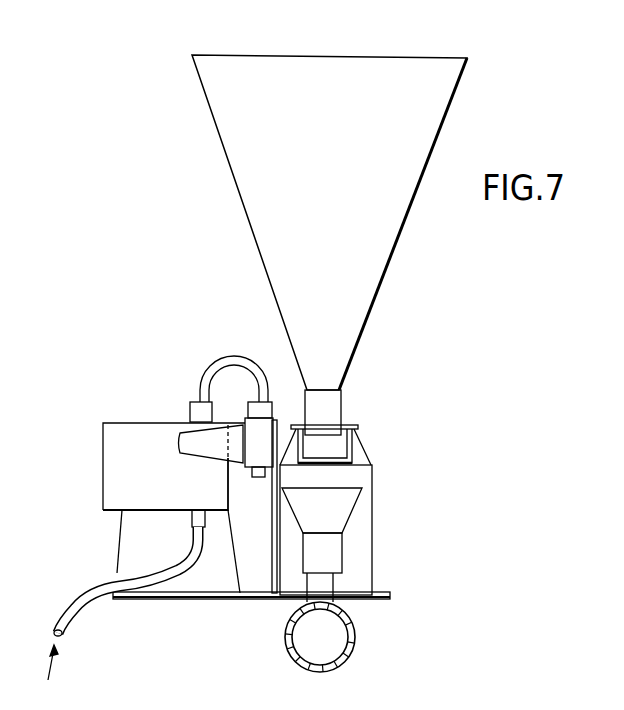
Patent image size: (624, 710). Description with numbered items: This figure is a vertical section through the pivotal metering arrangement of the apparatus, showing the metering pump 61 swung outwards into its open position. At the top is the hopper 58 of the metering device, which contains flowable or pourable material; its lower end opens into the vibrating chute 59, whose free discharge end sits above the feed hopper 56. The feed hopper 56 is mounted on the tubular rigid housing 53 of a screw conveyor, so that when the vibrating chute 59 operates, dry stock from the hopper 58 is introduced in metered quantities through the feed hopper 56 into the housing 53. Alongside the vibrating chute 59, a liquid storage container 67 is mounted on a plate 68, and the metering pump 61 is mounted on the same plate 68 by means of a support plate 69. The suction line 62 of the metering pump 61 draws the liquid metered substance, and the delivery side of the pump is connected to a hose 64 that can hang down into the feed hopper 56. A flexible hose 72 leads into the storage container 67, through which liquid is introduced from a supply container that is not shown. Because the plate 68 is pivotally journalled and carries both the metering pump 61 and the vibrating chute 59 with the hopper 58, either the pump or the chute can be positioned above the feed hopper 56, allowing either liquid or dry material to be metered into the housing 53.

The hopper 58 is at (400, 226).
The vibrating chute 59 is at (362, 462).
The feed hopper 56 is at (338, 512).
The plate 68 is at (182, 600).
The tubular rigid housing 53 is at (288, 652).
The support plate 69 is at (280, 427).
The hose 64 is at (257, 478).
The suction line 62 is at (223, 360).
The metering pump 61 is at (238, 420).
The liquid storage container 67 is at (113, 477).
The flexible hose 72 is at (83, 595).